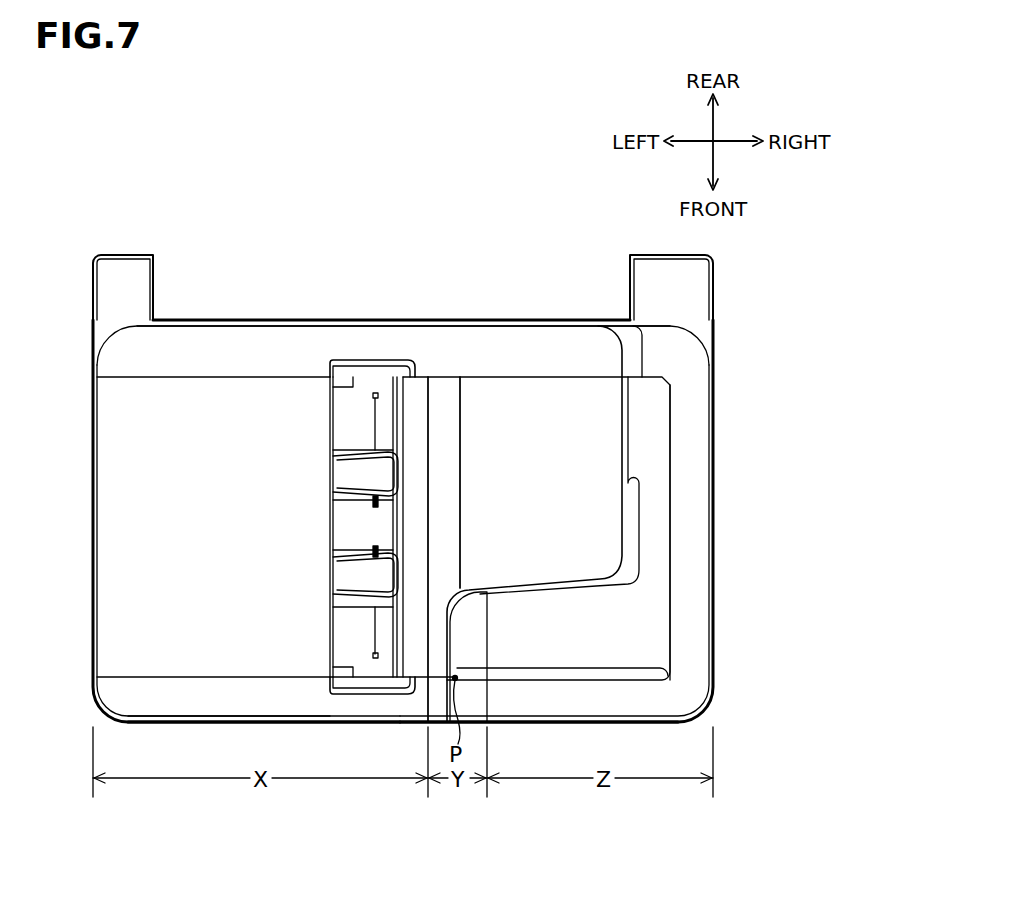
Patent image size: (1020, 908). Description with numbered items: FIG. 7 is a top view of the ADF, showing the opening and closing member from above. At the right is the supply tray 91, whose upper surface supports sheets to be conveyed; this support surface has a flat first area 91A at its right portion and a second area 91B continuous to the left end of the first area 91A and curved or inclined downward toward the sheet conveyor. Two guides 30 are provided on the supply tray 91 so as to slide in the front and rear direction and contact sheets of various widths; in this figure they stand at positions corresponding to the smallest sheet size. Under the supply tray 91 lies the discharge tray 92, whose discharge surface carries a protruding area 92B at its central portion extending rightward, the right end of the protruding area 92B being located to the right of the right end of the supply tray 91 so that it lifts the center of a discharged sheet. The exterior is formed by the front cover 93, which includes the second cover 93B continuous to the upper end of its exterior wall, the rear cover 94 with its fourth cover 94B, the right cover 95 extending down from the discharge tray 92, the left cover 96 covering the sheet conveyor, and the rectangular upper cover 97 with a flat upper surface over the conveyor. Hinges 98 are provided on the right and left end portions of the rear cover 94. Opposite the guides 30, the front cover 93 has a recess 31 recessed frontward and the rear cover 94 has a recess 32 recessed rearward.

The guide 30 is at (352, 474).
The recess 31 is at (370, 685).
The recess 32 is at (357, 372).
The supply tray 91 is at (574, 393).
The first area 91A is at (511, 482).
The second area 91B is at (445, 400).
The discharge tray 92 is at (654, 656).
The protruding area 92B is at (628, 574).
The front cover 93 is at (554, 740).
The second cover 93B is at (197, 700).
The rear cover 94 is at (528, 308).
The fourth cover 94B is at (478, 338).
The right cover 95 is at (735, 520).
The left cover 96 is at (80, 565).
The upper cover 97 is at (276, 527).
The hinge 98 is at (124, 272).